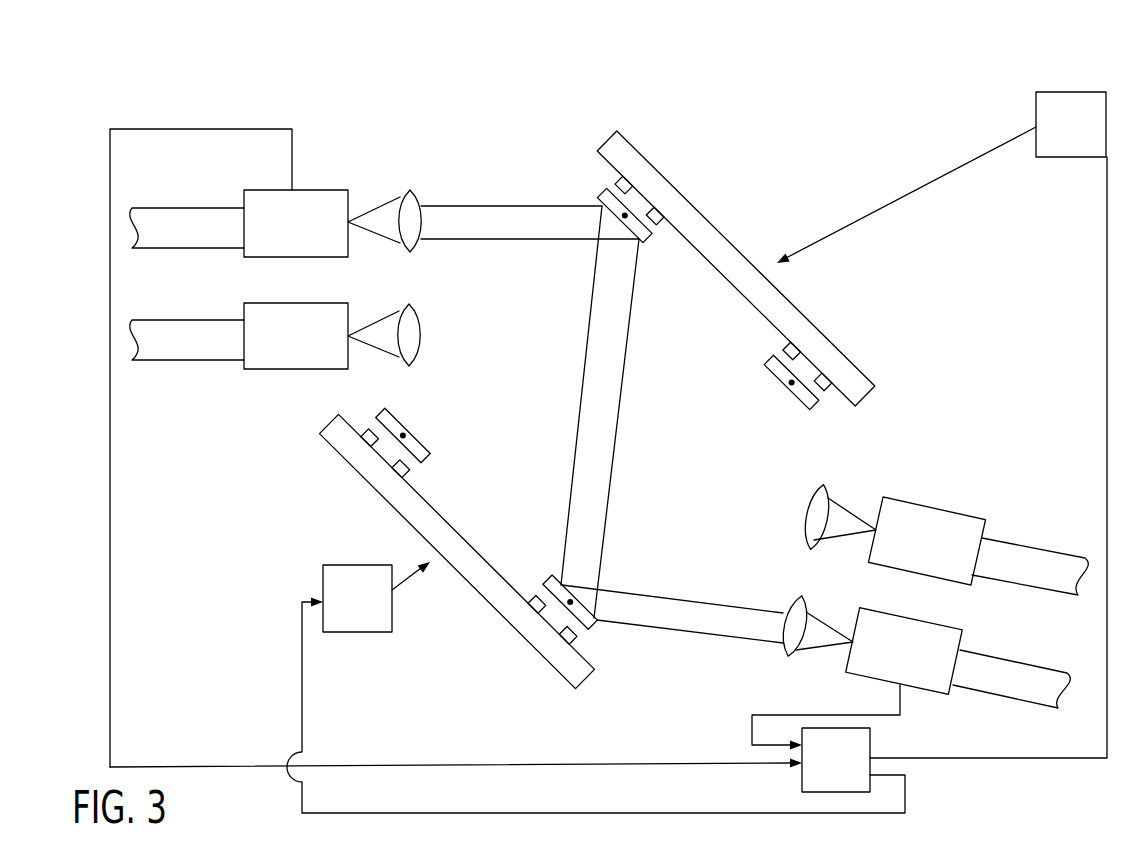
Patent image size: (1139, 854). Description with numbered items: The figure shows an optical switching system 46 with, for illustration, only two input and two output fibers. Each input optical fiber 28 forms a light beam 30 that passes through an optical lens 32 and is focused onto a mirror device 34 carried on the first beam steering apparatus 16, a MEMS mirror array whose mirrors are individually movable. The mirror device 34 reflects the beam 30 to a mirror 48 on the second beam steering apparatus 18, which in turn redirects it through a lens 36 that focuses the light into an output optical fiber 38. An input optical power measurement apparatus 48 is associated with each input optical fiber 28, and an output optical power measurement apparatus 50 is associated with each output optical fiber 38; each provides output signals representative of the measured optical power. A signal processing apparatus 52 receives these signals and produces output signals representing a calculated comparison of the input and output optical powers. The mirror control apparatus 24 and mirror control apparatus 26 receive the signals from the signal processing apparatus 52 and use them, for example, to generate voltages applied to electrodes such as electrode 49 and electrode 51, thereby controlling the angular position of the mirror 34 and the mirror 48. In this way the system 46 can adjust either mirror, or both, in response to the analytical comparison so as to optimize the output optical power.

The first beam steering apparatus 16 is at (607, 141).
The second beam steering apparatus 18 is at (576, 688).
The mirror control apparatus 24 is at (1036, 108).
The mirror control apparatus 26 is at (368, 633).
The input optical fiber 28 is at (167, 208).
The light beam 30 is at (497, 240).
The optical lens 32 is at (408, 190).
The mirror device 34 is at (600, 192).
The lens 36 is at (784, 660).
The output optical fiber 38 is at (990, 698).
The system 46 is at (320, 82).
The input optical power measurement apparatus 48 is at (322, 190).
The electrode 49 is at (630, 171).
The output optical power measurement apparatus 50 is at (942, 693).
The electrode 51 is at (660, 212).
The signal processing apparatus 52 is at (802, 787).